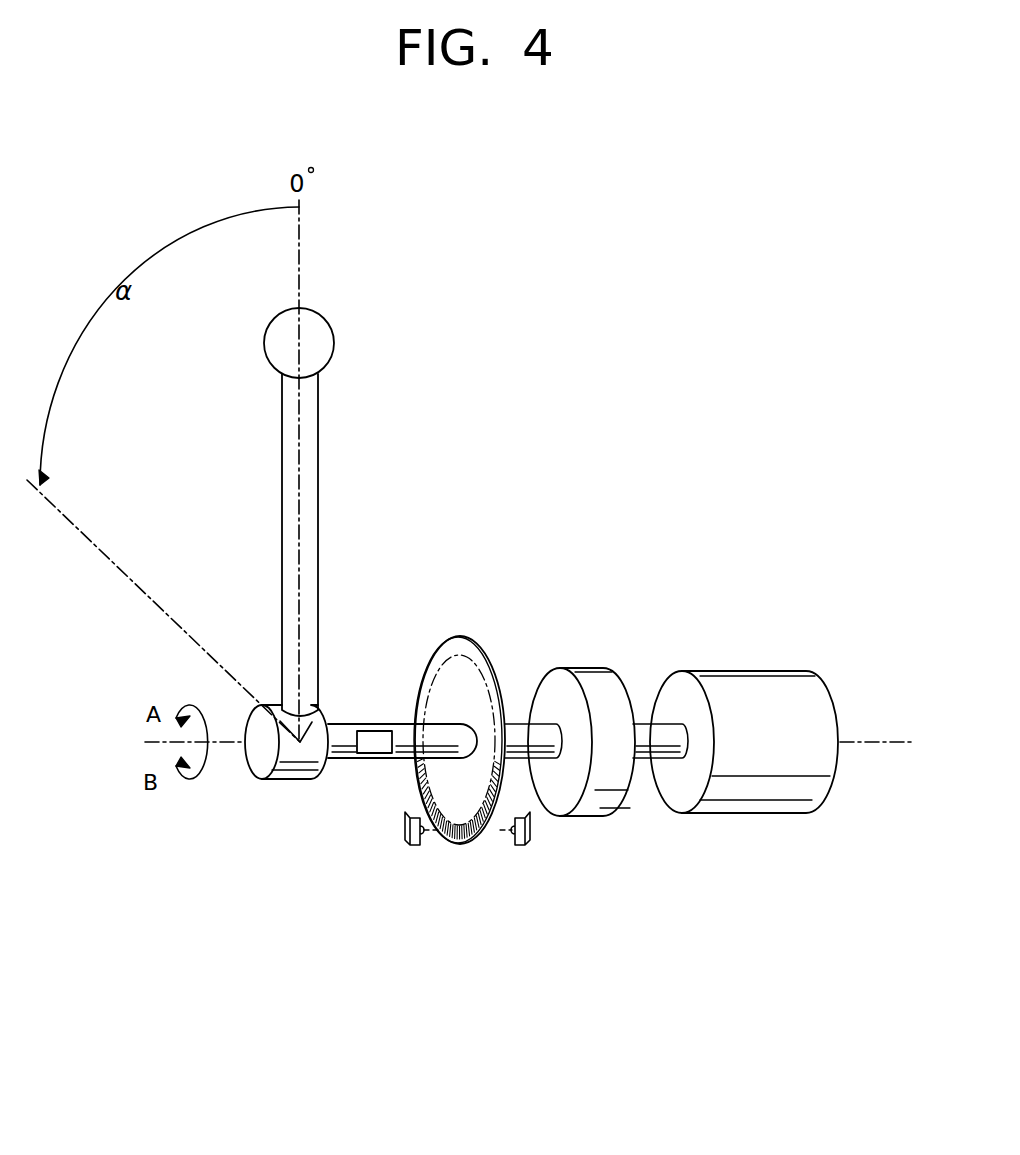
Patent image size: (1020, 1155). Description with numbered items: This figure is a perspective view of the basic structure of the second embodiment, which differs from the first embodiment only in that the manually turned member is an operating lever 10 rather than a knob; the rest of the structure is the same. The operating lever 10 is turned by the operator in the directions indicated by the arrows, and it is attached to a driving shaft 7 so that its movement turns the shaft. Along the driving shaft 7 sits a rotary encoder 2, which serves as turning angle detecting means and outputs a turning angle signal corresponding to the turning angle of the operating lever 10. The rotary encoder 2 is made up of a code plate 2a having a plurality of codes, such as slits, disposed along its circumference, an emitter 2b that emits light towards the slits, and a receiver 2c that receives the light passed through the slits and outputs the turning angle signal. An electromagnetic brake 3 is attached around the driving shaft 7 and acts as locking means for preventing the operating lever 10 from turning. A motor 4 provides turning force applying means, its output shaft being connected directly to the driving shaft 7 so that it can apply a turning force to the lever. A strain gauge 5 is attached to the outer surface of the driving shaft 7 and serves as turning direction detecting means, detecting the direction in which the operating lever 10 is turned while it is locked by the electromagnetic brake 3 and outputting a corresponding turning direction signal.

The rotary encoder 2 is at (452, 841).
The code plate 2a is at (470, 845).
The emitter 2b is at (405, 832).
The receiver 2c is at (517, 866).
The electromagnetic brake 3 is at (573, 668).
The motor 4 is at (730, 670).
The strain gauge 5 is at (378, 738).
The driving shaft 7 is at (650, 723).
The operating lever 10 is at (334, 343).